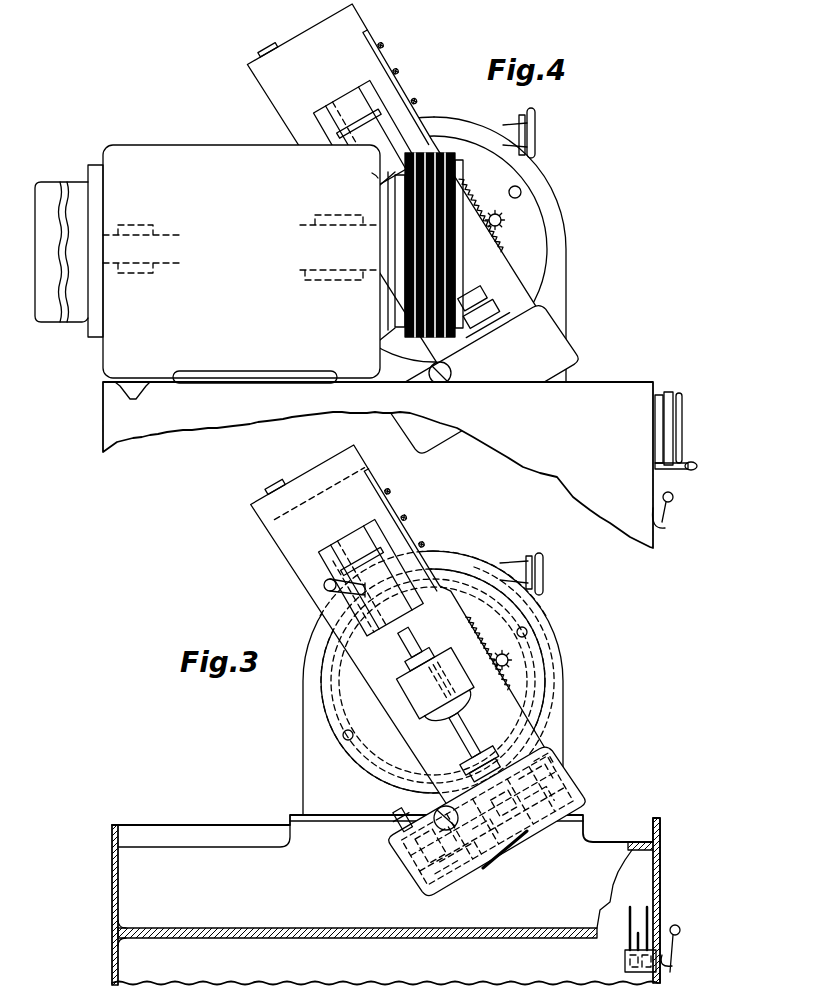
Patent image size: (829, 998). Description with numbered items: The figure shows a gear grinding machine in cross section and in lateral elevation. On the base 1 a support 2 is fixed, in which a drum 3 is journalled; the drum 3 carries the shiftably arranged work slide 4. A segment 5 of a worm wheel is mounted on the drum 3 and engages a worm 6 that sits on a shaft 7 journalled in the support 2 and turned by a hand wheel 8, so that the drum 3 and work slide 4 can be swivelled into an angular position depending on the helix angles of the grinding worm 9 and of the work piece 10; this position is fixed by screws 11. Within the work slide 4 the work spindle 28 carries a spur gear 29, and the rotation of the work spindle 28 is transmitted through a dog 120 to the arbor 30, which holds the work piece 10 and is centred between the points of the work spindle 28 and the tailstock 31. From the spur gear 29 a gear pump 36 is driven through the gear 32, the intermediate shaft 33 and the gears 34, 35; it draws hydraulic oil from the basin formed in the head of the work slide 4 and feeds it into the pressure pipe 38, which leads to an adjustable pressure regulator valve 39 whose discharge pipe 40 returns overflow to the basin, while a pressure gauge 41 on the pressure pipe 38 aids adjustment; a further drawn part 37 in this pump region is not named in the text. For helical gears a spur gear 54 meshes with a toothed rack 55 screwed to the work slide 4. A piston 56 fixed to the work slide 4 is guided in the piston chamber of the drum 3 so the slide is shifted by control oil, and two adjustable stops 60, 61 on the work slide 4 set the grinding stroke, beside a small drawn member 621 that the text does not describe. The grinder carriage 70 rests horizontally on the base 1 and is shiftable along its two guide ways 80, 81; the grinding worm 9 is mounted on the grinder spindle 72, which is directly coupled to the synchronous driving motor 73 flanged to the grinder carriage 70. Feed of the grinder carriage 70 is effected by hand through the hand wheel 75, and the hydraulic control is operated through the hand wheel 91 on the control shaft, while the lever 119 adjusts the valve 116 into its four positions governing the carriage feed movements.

In FIG. 4, the base 1 is at (103, 425).
In FIG. 3, the base 1 is at (660, 880).
In FIG. 4, the support 2 is at (552, 218).
In FIG. 3, the support 2 is at (555, 640).
In FIG. 4, the drum 3 is at (528, 293).
In FIG. 3, the drum 3 is at (545, 673).
In FIG. 4, the work slide 4 is at (505, 275).
In FIG. 3, the work slide 4 is at (282, 553).
In FIG. 3, the segment of a worm wheel 5 is at (472, 607).
In FIG. 3, the worm 6 is at (447, 556).
In FIG. 3, the shaft 7 is at (524, 561).
In FIG. 4, the hand wheel 8 is at (536, 125).
In FIG. 3, the hand wheel 8 is at (544, 575).
In FIG. 4, the grinding worm 9 is at (456, 267).
In FIG. 3, the work piece 10 is at (455, 658).
In FIG. 4, the screws 11 is at (521, 192).
In FIG. 3, the screws 11 is at (346, 740).
In FIG. 4, the work spindle 28 is at (484, 318).
In FIG. 3, the work spindle 28 is at (487, 821).
In FIG. 3, the spur gear 29 is at (568, 776).
In FIG. 3, the arbor 30 is at (455, 733).
In FIG. 4, the tailstock 31 is at (392, 137).
In FIG. 3, the tailstock 31 is at (380, 546).
In FIG. 3, the gear 32 is at (490, 876).
In FIG. 3, the intermediate shaft 33 is at (514, 870).
In FIG. 3, the gear 34 is at (490, 872).
In FIG. 3, the gear 35 is at (463, 890).
In FIG. 3, the gear pump 36 is at (395, 866).
In FIG. 3, the contact 37 is at (412, 874).
In FIG. 3, the pressure pipe 38 is at (390, 846).
In FIG. 3, the pressure regulator valve 39 is at (395, 805).
In FIG. 3, the discharge pipe 40 is at (423, 890).
In FIG. 4, the pressure gauge 41 is at (450, 378).
In FIG. 3, the pressure gauge 41 is at (450, 804).
In FIG. 4, the spur gear 54 is at (503, 222).
In FIG. 3, the spur gear 54 is at (503, 651).
In FIG. 4, the toothed rack 55 is at (472, 205).
In FIG. 3, the toothed rack 55 is at (500, 682).
In FIG. 3, the piston 56 is at (316, 467).
In FIG. 4, the adjustable stop 60 is at (418, 103).
In FIG. 3, the adjustable stop 60 is at (420, 544).
In FIG. 4, the adjustable stop 61 is at (381, 43).
In FIG. 3, the adjustable stop 61 is at (388, 484).
In FIG. 4, the screw 621 is at (399, 73).
In FIG. 3, the screw 621 is at (407, 516).
In FIG. 4, the grinder carriage 70 is at (126, 152).
In FIG. 4, the grinder spindle 72 is at (177, 263).
In FIG. 4, the driving motor 73 is at (47, 190).
In FIG. 4, the hand wheel 75 is at (678, 402).
In FIG. 4, the guide way 80 is at (115, 386).
In FIG. 4, the guide way 81 is at (330, 386).
In FIG. 4, the hand wheel 91 is at (673, 440).
In FIG. 3, the valve 116 is at (622, 962).
In FIG. 4, the lever 119 is at (668, 520).
In FIG. 3, the lever 119 is at (678, 960).
In FIG. 4, the dog 120 is at (476, 299).
In FIG. 3, the dog 120 is at (483, 738).